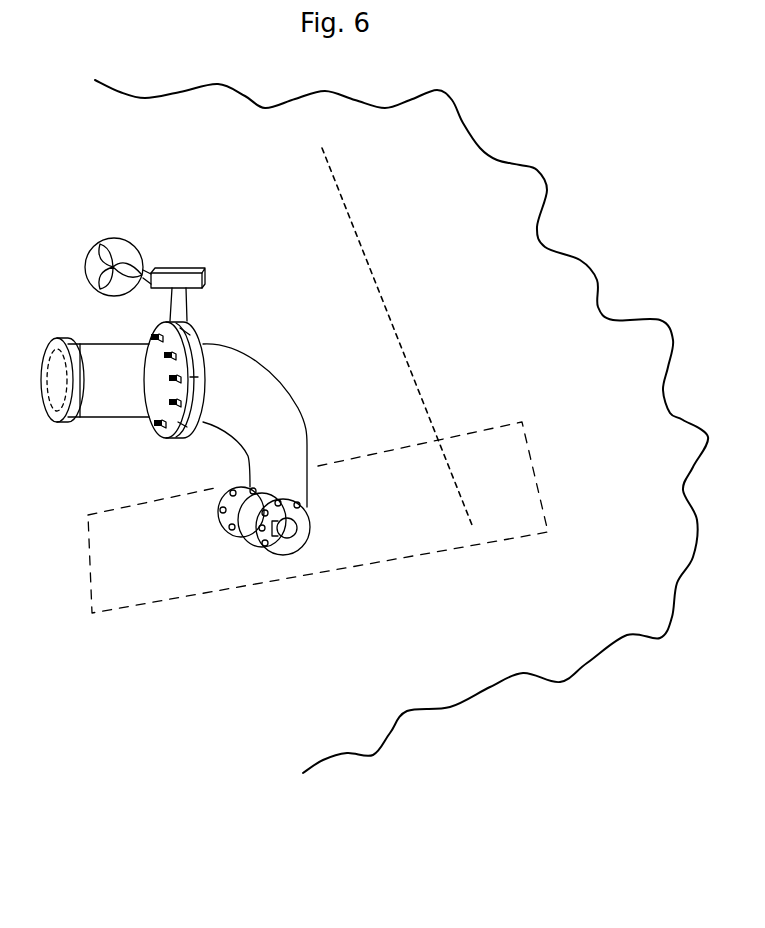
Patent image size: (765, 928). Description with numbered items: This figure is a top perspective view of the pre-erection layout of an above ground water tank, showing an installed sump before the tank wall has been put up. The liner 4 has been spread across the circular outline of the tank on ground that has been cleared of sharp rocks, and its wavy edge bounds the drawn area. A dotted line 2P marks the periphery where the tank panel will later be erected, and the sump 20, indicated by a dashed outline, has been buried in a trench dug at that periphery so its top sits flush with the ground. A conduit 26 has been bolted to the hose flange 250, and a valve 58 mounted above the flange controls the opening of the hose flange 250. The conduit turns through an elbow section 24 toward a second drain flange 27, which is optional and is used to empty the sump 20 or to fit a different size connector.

The liner 4 is at (417, 200).
The sump 20 is at (472, 455).
The dotted line 2P is at (496, 499).
The elbow pipe 24 is at (275, 413).
The conduit 26 is at (110, 407).
The second drain flange 27 is at (288, 531).
The valve 58 is at (127, 242).
The hose flange 250 is at (192, 348).